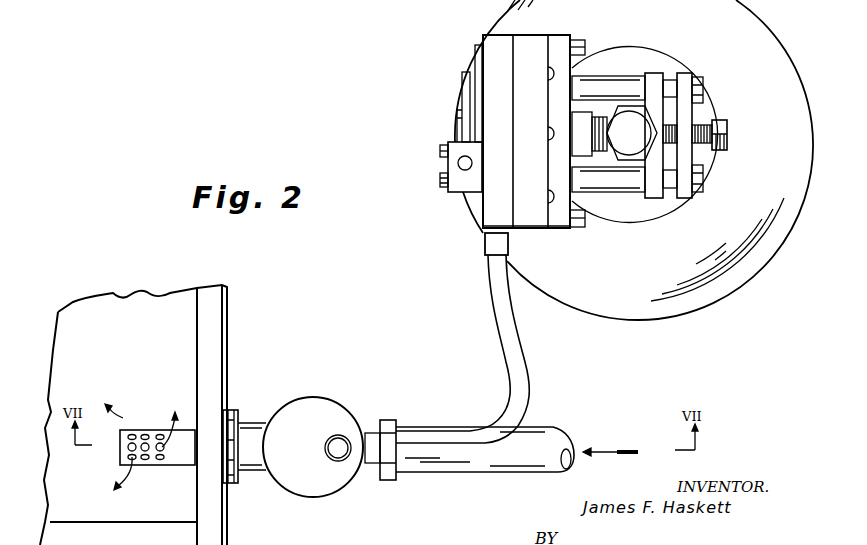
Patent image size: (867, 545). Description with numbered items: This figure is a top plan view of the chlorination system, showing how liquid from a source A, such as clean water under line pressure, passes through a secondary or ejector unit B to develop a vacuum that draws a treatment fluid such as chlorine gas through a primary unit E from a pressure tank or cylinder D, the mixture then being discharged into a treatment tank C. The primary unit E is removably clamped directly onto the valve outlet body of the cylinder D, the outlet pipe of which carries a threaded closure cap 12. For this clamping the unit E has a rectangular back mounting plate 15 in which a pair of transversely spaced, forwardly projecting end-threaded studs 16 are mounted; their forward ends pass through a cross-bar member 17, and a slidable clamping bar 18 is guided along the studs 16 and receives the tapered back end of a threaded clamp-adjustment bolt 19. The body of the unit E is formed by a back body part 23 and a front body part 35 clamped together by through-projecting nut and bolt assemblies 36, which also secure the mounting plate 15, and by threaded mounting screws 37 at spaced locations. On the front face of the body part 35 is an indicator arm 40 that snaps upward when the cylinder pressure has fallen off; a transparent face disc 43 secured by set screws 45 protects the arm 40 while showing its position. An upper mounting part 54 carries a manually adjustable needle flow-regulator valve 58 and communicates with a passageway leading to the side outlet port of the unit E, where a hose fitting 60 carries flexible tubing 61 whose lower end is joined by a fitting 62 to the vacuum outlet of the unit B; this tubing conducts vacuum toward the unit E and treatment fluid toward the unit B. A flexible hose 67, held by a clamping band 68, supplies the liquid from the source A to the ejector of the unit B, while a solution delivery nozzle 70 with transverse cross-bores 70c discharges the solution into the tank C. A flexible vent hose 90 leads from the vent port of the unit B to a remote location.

The threaded closure cap 12 is at (633, 157).
The rectangular back mounting plate 15 is at (563, 36).
The end-threaded studs 16 is at (700, 80).
The cross-bar member 17 is at (683, 73).
The slidable clamping bar 18 is at (655, 73).
The threaded clamp-adjustment bolt 19 is at (727, 127).
The back body part 23 is at (535, 223).
The front body part 35 is at (488, 199).
The nut and bolt assemblies 36 is at (587, 227).
The threaded mounting screws 37 is at (555, 226).
The arm 40 is at (478, 48).
The face disc 43 is at (468, 78).
The set screws 45 is at (457, 113).
The upper mounting part 54 is at (447, 170).
The needle flow-regulator valve 58 is at (453, 163).
The hose fitting 60 is at (485, 245).
The flexible tubing 61 is at (512, 320).
The fitting 62 is at (377, 452).
The flexible hose 67 is at (503, 473).
The clamping band 68 is at (395, 470).
The solution delivery nozzle 70 is at (150, 444).
The cross-bores 70c is at (157, 415).
The flexible vent hose 90 is at (347, 438).
The source of liquid A is at (610, 436).
The secondary or ejector unit B is at (315, 393).
The treatment tank C is at (133, 272).
The pressure tank or cylinder D is at (740, 275).
The primary unit E is at (527, 36).